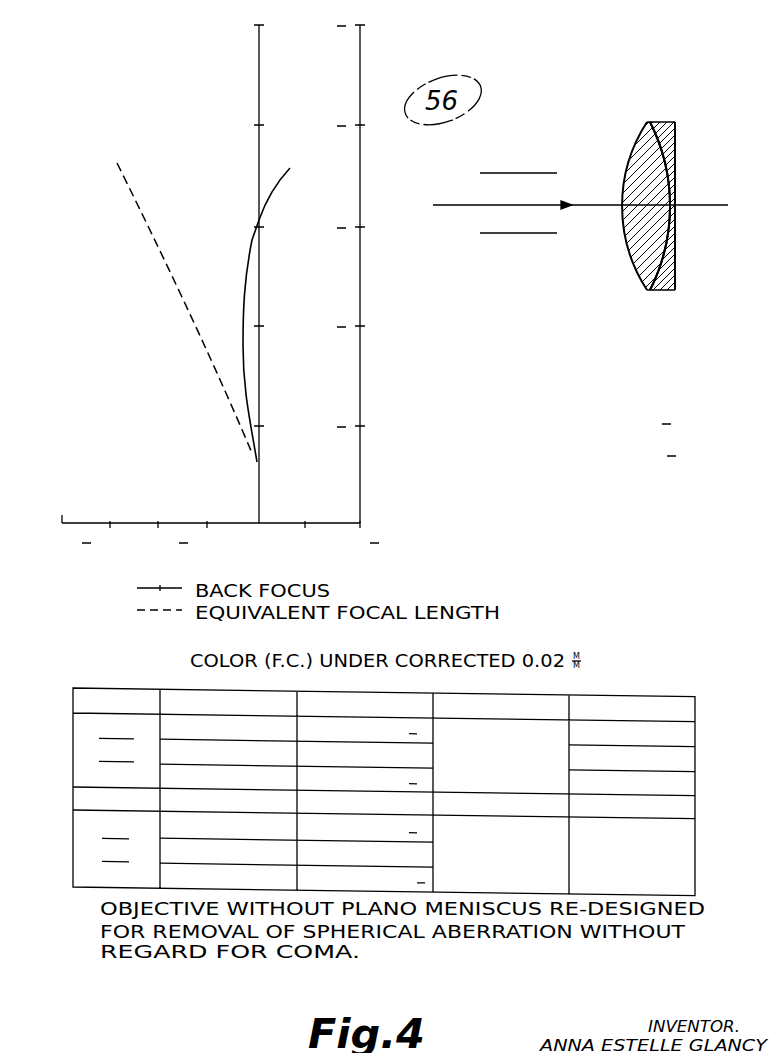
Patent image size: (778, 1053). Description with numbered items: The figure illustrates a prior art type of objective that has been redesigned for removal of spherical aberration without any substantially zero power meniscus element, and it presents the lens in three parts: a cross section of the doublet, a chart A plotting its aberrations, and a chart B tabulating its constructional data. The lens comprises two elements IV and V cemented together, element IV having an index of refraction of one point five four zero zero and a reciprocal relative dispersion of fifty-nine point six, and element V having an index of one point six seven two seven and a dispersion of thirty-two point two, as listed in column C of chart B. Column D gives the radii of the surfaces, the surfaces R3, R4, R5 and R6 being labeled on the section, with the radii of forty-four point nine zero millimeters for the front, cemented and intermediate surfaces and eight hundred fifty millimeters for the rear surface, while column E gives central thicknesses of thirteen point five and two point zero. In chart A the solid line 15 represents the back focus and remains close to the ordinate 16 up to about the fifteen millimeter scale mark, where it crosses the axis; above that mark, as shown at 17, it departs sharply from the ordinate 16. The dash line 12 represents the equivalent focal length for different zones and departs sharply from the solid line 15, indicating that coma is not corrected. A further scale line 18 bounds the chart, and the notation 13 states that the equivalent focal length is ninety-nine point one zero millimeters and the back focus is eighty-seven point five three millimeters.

The dash line 12 is at (207, 343).
The focal length and back focus notation 13 is at (522, 412).
The solid line 15 is at (243, 277).
The ordinate 16 is at (261, 118).
The departure of solid line 17 is at (287, 187).
The reference ordinate line 18 is at (358, 374).
The chart A is at (82, 557).
The chart B is at (359, 768).
The column C is at (175, 708).
The column D is at (388, 698).
The column E is at (554, 735).
The surface R3 is at (626, 238).
The surface R4 is at (642, 220).
The front surface of lens element V R5 is at (672, 234).
The rear surface of lens element V R6 is at (676, 270).
The element IV is at (611, 186).
The element V is at (609, 177).